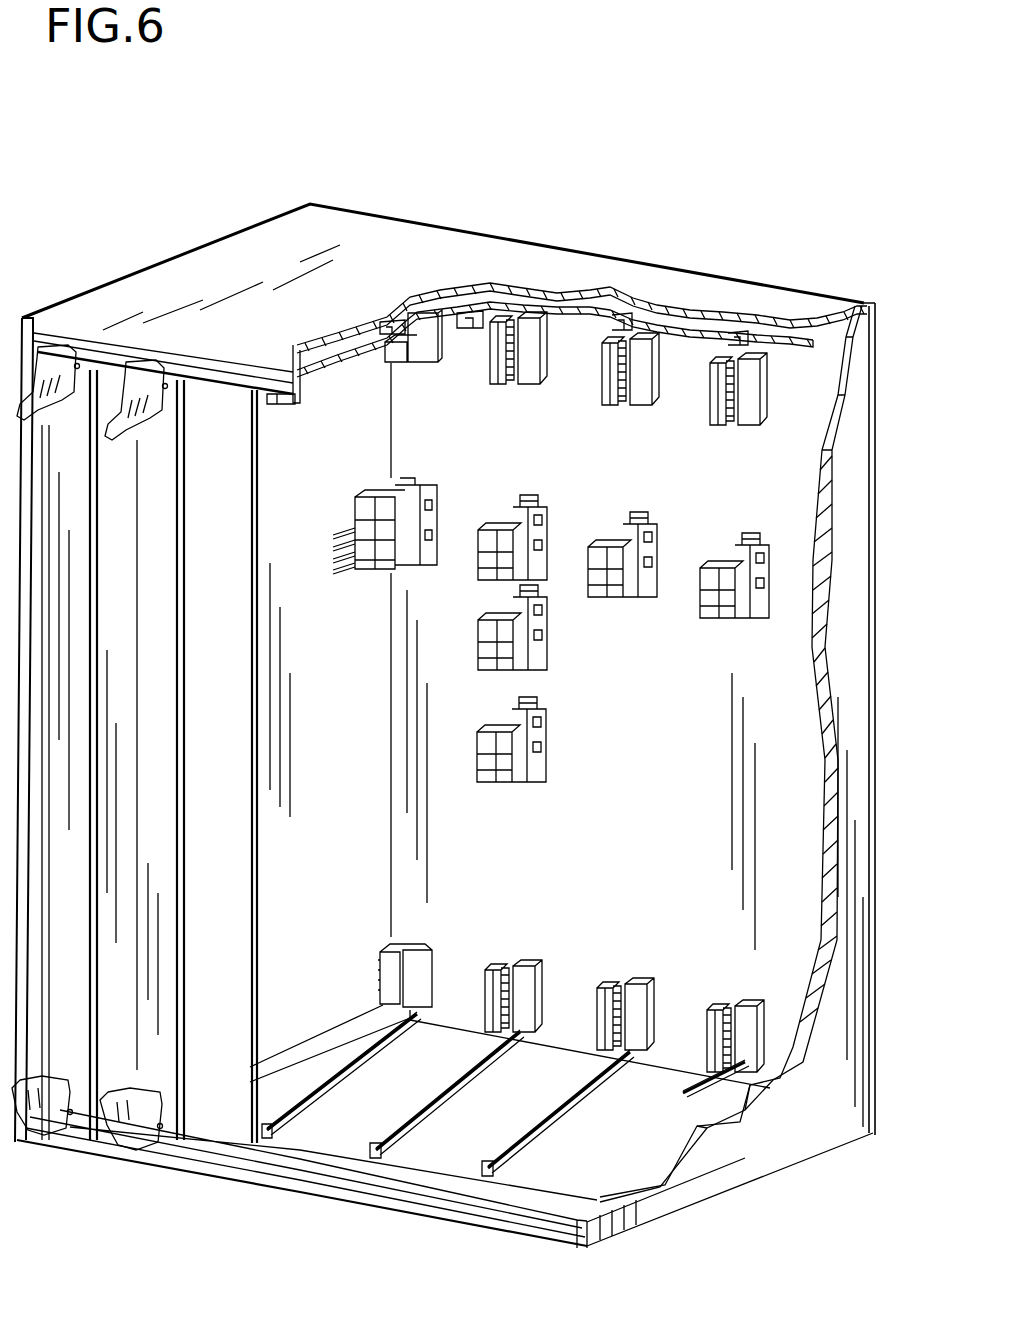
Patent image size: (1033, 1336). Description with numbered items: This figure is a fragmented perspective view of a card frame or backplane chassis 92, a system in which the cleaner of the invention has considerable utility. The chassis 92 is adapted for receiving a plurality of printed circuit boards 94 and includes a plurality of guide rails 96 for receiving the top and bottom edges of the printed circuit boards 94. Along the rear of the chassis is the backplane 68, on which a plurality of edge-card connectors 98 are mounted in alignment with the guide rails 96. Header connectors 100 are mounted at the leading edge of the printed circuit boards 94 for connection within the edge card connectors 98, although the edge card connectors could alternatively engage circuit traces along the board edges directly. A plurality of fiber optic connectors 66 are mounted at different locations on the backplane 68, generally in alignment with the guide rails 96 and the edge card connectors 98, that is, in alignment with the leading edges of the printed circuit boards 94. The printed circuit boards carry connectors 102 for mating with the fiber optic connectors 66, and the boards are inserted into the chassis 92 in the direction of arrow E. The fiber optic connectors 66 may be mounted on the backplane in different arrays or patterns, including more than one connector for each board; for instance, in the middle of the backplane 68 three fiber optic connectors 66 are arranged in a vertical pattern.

The backplane chassis 92 is at (628, 252).
The printed circuit boards 94 is at (336, 665).
The backplane 68 is at (716, 774).
The guide rails 96 is at (283, 396).
The edge-card connectors 98 is at (523, 363).
The header connectors 100 is at (400, 347).
The connectors 102 is at (355, 500).
The fiber optic connectors 66 is at (510, 500).
The arrow E is at (357, 820).